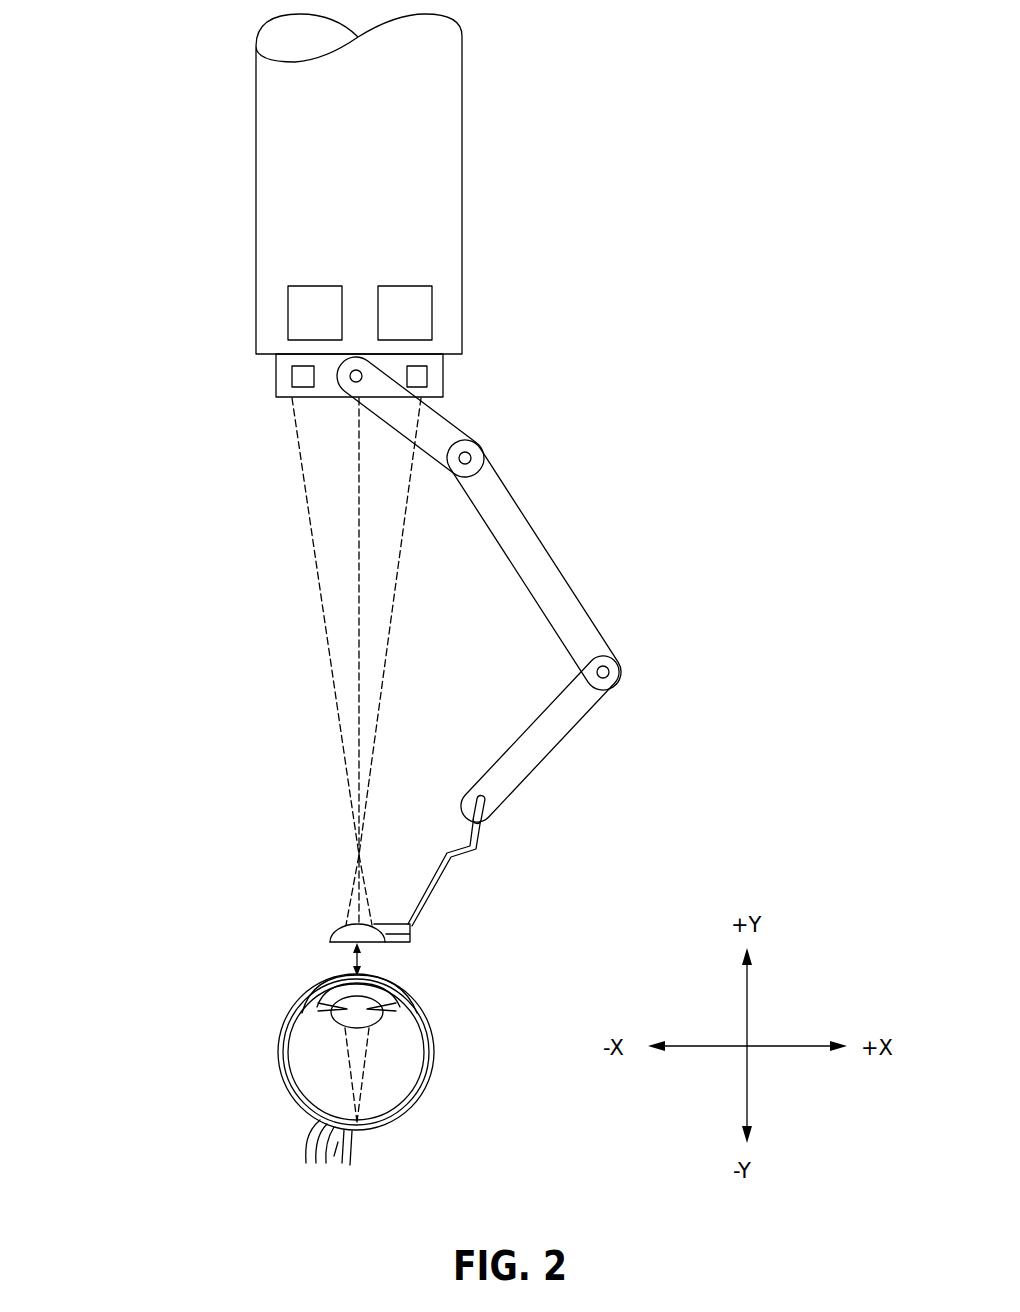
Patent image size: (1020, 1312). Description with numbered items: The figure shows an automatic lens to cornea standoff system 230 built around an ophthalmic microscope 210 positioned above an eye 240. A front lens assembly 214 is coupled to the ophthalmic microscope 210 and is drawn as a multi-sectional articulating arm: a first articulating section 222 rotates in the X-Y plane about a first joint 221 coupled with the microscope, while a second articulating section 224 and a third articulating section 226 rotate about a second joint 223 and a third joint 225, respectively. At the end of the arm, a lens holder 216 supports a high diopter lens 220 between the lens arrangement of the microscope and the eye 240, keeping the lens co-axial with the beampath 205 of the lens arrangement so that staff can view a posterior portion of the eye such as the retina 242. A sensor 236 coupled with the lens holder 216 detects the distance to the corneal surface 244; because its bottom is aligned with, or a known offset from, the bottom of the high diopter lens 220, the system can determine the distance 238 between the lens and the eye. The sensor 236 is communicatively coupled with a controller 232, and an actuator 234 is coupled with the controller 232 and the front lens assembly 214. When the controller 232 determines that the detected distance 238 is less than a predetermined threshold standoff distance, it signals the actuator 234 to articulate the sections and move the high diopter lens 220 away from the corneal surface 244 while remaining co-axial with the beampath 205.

The automatic lens to cornea standoff system 230 is at (153, 46).
The ophthalmic microscope 210 is at (227, 177).
The controller 232 is at (292, 375).
The actuator 234 is at (446, 372).
The beampath 205 is at (304, 632).
The front lens assembly 214 is at (610, 493).
The first joint 221 is at (353, 380).
The first articulating section 222 is at (445, 418).
The second joint 223 is at (470, 452).
The second articulating section 224 is at (551, 552).
The third joint 225 is at (610, 672).
The third articulating section 226 is at (572, 732).
The lens holder 216 is at (445, 878).
The high diopter lens 220 is at (335, 928).
The sensor 236 is at (410, 935).
The distance 238 is at (366, 958).
The corneal surface 244 is at (330, 978).
The eye 240 is at (435, 1062).
The retina 242 is at (392, 1132).